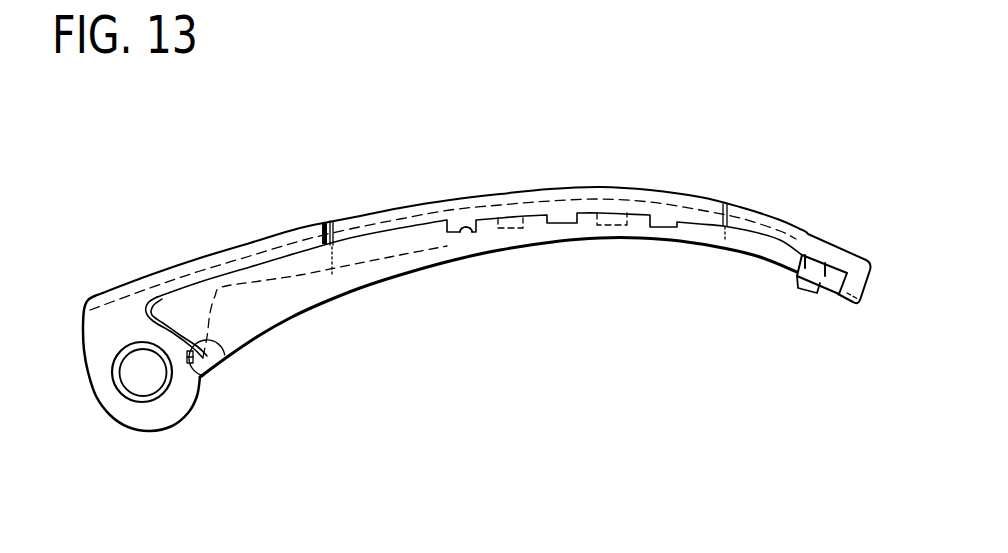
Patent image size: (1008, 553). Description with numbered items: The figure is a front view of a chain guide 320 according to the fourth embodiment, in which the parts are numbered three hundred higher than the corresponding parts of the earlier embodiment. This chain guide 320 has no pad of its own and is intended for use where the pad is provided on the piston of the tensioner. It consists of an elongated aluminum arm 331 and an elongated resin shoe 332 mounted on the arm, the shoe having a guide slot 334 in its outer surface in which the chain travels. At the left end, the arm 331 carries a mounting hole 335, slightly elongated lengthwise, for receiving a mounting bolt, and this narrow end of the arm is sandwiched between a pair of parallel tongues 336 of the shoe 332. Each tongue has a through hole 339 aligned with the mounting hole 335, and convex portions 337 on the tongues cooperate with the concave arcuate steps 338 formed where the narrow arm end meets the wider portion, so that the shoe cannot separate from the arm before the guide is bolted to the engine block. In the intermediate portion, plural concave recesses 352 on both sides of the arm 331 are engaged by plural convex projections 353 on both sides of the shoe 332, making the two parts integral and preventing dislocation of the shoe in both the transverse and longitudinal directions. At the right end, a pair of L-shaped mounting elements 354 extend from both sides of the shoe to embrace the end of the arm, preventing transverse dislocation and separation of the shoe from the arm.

The chain guide 320 is at (421, 178).
The arm 331 is at (417, 268).
The shoe 332 is at (291, 227).
The guide slot 334 is at (378, 223).
The mounting hole 335 is at (139, 396).
The tongues 336 is at (85, 367).
The convex portions 337 is at (207, 376).
The steps 338 is at (224, 348).
The through holes 339 is at (122, 395).
The concave recesses 352 is at (469, 234).
The convex projections 353 is at (563, 219).
The L-shaped mounting elements 354 is at (819, 292).